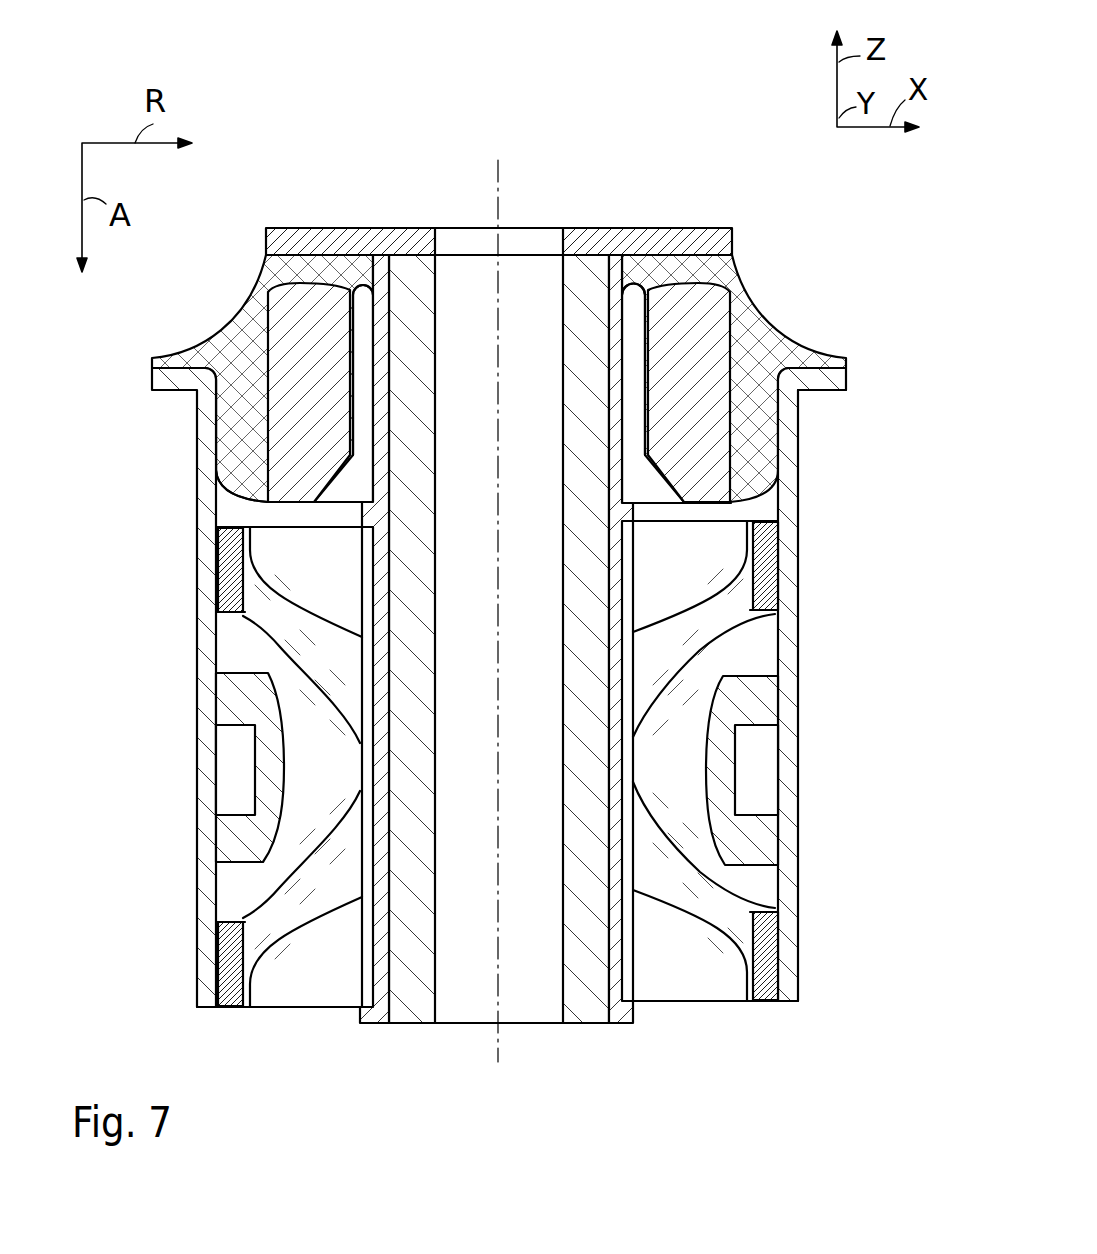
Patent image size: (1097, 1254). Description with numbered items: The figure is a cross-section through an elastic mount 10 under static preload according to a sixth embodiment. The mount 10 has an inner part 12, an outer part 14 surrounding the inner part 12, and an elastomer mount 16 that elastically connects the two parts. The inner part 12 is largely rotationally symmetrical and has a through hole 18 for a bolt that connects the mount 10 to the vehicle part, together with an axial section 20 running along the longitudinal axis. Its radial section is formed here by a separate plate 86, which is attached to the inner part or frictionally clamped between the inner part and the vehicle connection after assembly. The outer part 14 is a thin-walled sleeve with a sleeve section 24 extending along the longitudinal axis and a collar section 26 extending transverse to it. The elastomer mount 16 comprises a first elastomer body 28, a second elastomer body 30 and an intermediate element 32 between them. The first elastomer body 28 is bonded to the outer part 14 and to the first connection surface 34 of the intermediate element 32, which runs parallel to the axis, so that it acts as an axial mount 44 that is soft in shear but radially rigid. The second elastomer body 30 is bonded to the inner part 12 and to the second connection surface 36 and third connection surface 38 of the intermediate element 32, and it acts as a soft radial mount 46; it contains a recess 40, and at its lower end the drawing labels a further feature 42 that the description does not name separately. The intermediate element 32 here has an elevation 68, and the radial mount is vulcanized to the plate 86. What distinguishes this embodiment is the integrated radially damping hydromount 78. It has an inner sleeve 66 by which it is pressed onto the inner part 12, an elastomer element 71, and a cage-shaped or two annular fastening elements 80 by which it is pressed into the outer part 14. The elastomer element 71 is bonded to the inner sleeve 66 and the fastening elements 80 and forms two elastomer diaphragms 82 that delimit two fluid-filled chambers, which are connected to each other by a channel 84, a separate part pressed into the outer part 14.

The mount 10 is at (712, 195).
The inner part 12 is at (577, 303).
The outer part 14 is at (792, 452).
The elastomer mount 16 is at (785, 272).
The through hole 18 is at (448, 290).
The axial section 20 is at (425, 365).
The sleeve section 24 is at (790, 647).
The collar section 26 is at (840, 400).
The first elastomer body 28 is at (233, 358).
The second elastomer body 30 is at (313, 267).
The intermediate element 32 is at (287, 330).
The first connection surface 34 is at (735, 363).
The second connection surface 36 is at (740, 258).
The third connection surface 38 is at (647, 382).
The recess 40 is at (358, 425).
The lip 42 is at (337, 477).
The axial mount 44 is at (233, 427).
The radial mount 46 is at (337, 267).
The inner sleeve 66 is at (380, 658).
The elevation 68 is at (688, 270).
The elastomer element 71 is at (677, 934).
The hydromount 78 is at (287, 568).
The fastening element 80 is at (225, 578).
The elastomer diaphragms 82 is at (283, 623).
The channel 84 is at (235, 768).
The plate 86 is at (610, 267).